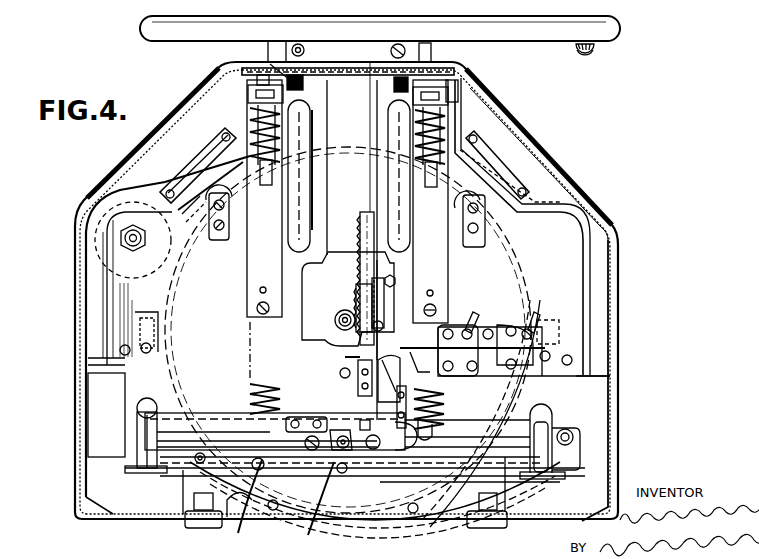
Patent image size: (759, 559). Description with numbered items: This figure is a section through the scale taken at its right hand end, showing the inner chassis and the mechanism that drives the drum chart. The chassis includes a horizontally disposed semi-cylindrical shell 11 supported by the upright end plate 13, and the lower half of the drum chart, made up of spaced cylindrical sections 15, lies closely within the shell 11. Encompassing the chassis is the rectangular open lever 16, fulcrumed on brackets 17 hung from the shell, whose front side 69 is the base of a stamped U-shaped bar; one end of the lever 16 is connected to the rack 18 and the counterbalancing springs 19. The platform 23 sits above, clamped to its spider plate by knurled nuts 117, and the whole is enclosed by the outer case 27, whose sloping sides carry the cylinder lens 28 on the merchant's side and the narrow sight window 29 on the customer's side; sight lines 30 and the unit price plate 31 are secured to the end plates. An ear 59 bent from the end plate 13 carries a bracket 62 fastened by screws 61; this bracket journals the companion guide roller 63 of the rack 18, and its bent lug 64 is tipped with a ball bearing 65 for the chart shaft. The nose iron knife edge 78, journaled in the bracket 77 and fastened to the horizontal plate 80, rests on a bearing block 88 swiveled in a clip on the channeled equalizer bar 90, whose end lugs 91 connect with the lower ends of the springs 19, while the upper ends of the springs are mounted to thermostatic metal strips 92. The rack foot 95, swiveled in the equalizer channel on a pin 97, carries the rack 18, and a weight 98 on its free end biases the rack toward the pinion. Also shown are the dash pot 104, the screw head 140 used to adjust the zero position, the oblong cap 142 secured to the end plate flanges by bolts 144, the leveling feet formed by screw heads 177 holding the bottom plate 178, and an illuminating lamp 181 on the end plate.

The semi-cylindrical shell 11 is at (515, 393).
The end plate 13 is at (552, 232).
The cylindrical sections 15 is at (358, 147).
The lever 16 is at (135, 470).
The brackets 17 is at (375, 489).
The rack 18 is at (362, 214).
The counterbalancing springs 19 is at (252, 392).
The platform 23 is at (393, 22).
The outer case 27 is at (84, 322).
The cylinder lens 28 is at (164, 197).
The sight window 29 is at (508, 170).
The sight lines 30 is at (228, 200).
The plate 31 is at (182, 218).
The ear 59 is at (360, 268).
The screws 61 is at (396, 280).
The bracket 62 is at (434, 294).
The guide roller 63 is at (355, 284).
The lug 64 is at (366, 308).
The ball bearing 65 is at (335, 321).
The front side of lever 69 is at (522, 470).
The bracket 77 is at (356, 398).
The nose iron knife edge 78 is at (340, 430).
The horizontal plate 80 is at (250, 413).
The bearing block 88 is at (294, 417).
The equalizer bar 90 is at (433, 526).
The lugs 91 is at (430, 440).
The thermostatic metal strips 92 is at (247, 262).
The rack foot 95 is at (390, 378).
The pin 97 is at (309, 528).
The weight 98 is at (237, 528).
The dash pot 104 is at (98, 434).
The knurled nuts 117 is at (594, 55).
The screw head 140 is at (568, 430).
The cap 142 is at (458, 74).
The bolts 144 is at (266, 63).
The screw heads 177 is at (203, 529).
The bottom plate 178 is at (135, 515).
The illuminating lamps 181 is at (106, 218).